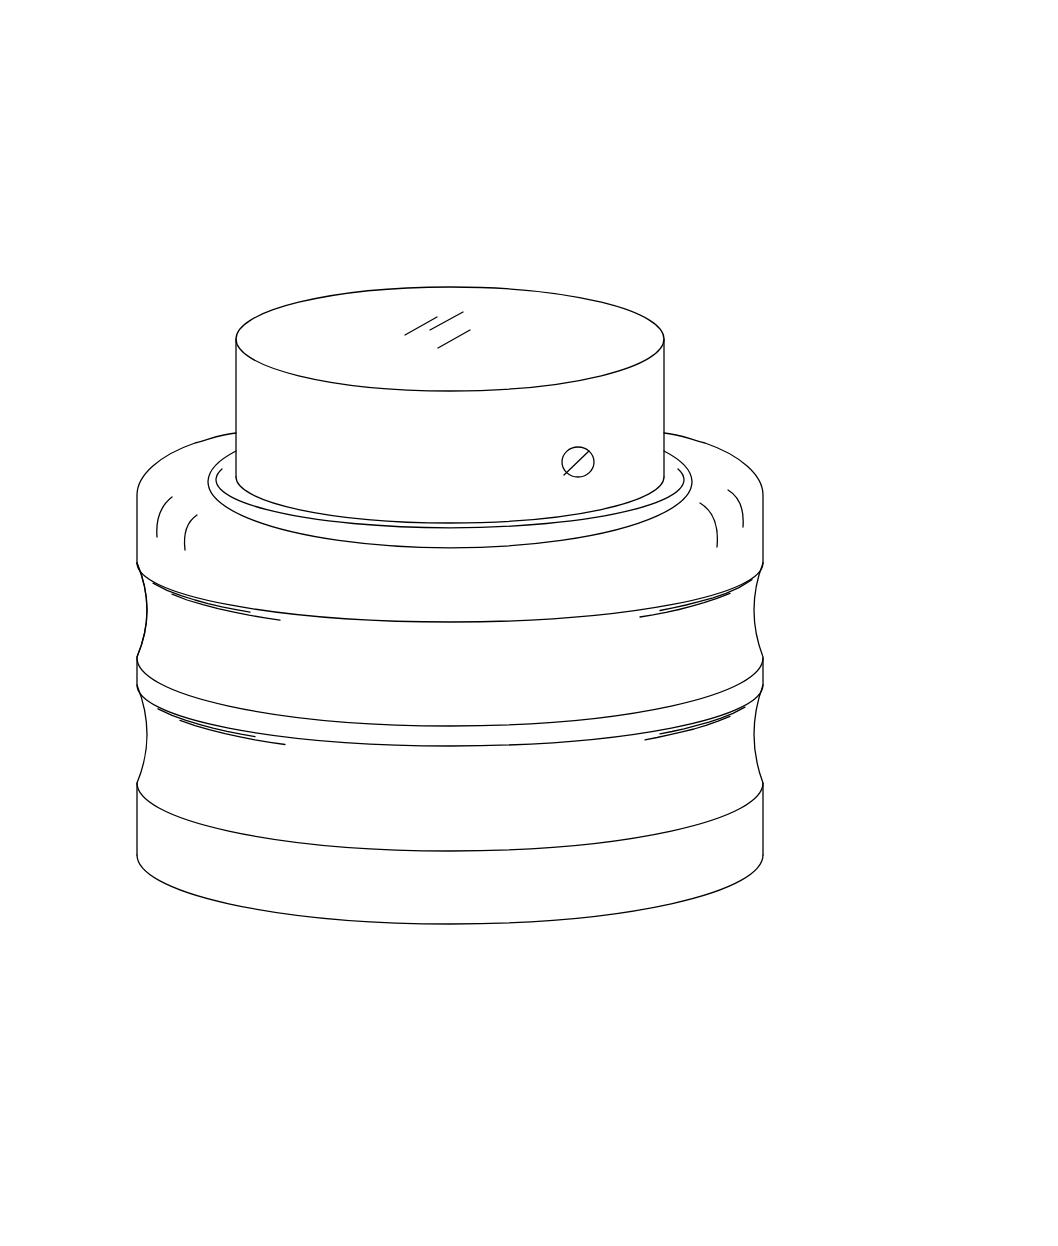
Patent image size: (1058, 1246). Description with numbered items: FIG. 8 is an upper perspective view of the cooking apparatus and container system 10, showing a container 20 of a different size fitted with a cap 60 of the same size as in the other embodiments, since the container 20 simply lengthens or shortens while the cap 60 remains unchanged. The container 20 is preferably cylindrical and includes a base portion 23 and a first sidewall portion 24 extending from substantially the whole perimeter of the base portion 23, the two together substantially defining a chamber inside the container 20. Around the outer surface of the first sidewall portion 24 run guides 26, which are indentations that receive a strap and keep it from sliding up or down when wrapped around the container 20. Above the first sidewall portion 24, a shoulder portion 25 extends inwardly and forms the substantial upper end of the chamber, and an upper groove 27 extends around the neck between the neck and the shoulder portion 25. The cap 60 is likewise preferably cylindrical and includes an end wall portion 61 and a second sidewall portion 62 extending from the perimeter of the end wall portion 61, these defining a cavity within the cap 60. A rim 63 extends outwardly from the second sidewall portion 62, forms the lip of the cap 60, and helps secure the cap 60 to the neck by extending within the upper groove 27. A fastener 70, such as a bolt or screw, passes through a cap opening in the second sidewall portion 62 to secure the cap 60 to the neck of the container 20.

The cooking apparatus and container system 10 is at (598, 64).
The container 20 is at (689, 899).
The base portion 23 is at (280, 913).
The first sidewall portion 24 is at (766, 668).
The shoulder portion 25 is at (137, 493).
The guide 26 is at (143, 623).
The upper groove 27 is at (209, 482).
The cap 60 is at (321, 293).
The end wall portion 61 is at (525, 303).
The second sidewall portion 62 is at (250, 408).
The rim 63 is at (680, 458).
The fastener 70 is at (585, 449).